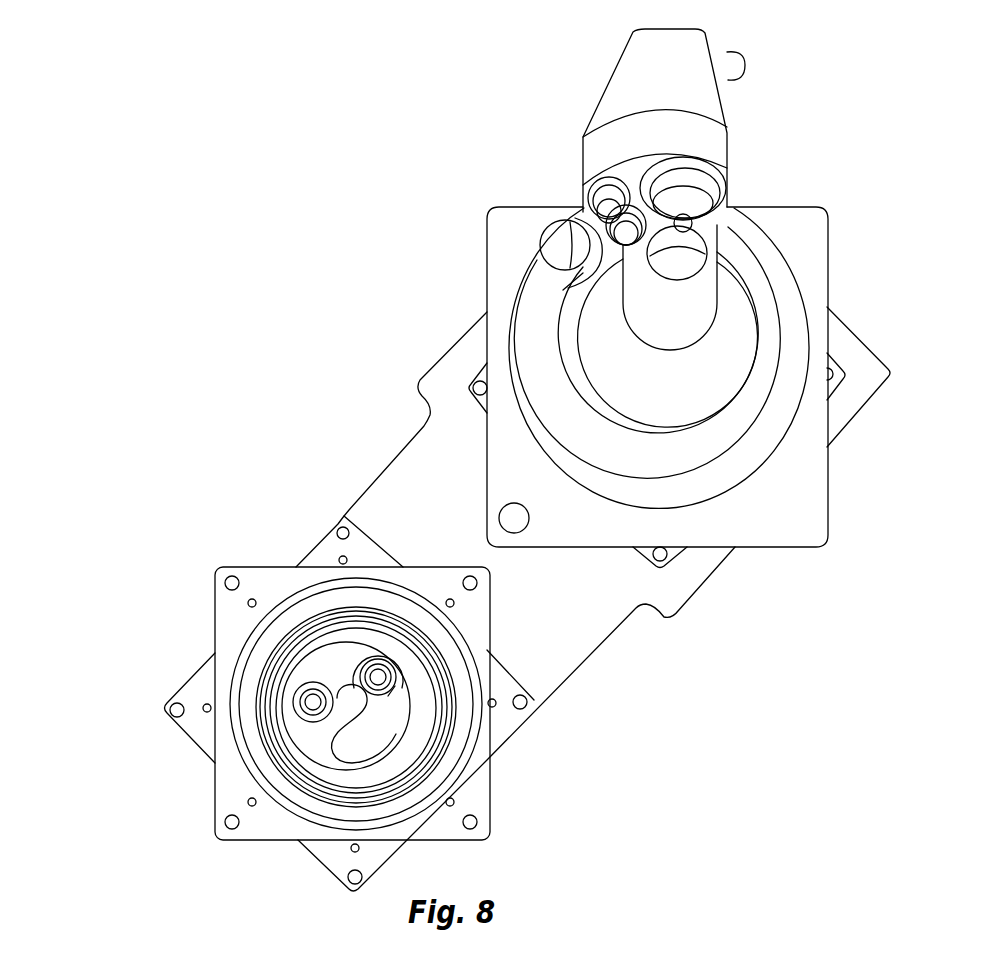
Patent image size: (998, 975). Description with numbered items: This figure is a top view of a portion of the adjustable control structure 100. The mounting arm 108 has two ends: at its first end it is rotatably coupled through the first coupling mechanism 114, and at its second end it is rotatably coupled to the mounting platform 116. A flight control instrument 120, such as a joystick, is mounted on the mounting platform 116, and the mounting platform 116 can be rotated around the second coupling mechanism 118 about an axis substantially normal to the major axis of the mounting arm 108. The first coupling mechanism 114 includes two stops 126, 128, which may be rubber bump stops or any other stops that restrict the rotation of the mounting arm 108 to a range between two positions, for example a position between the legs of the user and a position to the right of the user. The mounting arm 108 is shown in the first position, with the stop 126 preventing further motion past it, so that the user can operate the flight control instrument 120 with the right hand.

The adjustable control structure 100 is at (883, 72).
The mounting arm 108 is at (423, 472).
The first coupling mechanism 114 is at (230, 765).
The mounting platform 116 is at (502, 232).
The second coupling mechanism 118 is at (858, 365).
The flight control instrument 120 is at (640, 68).
The stop 126 is at (378, 678).
The stop 128 is at (313, 702).